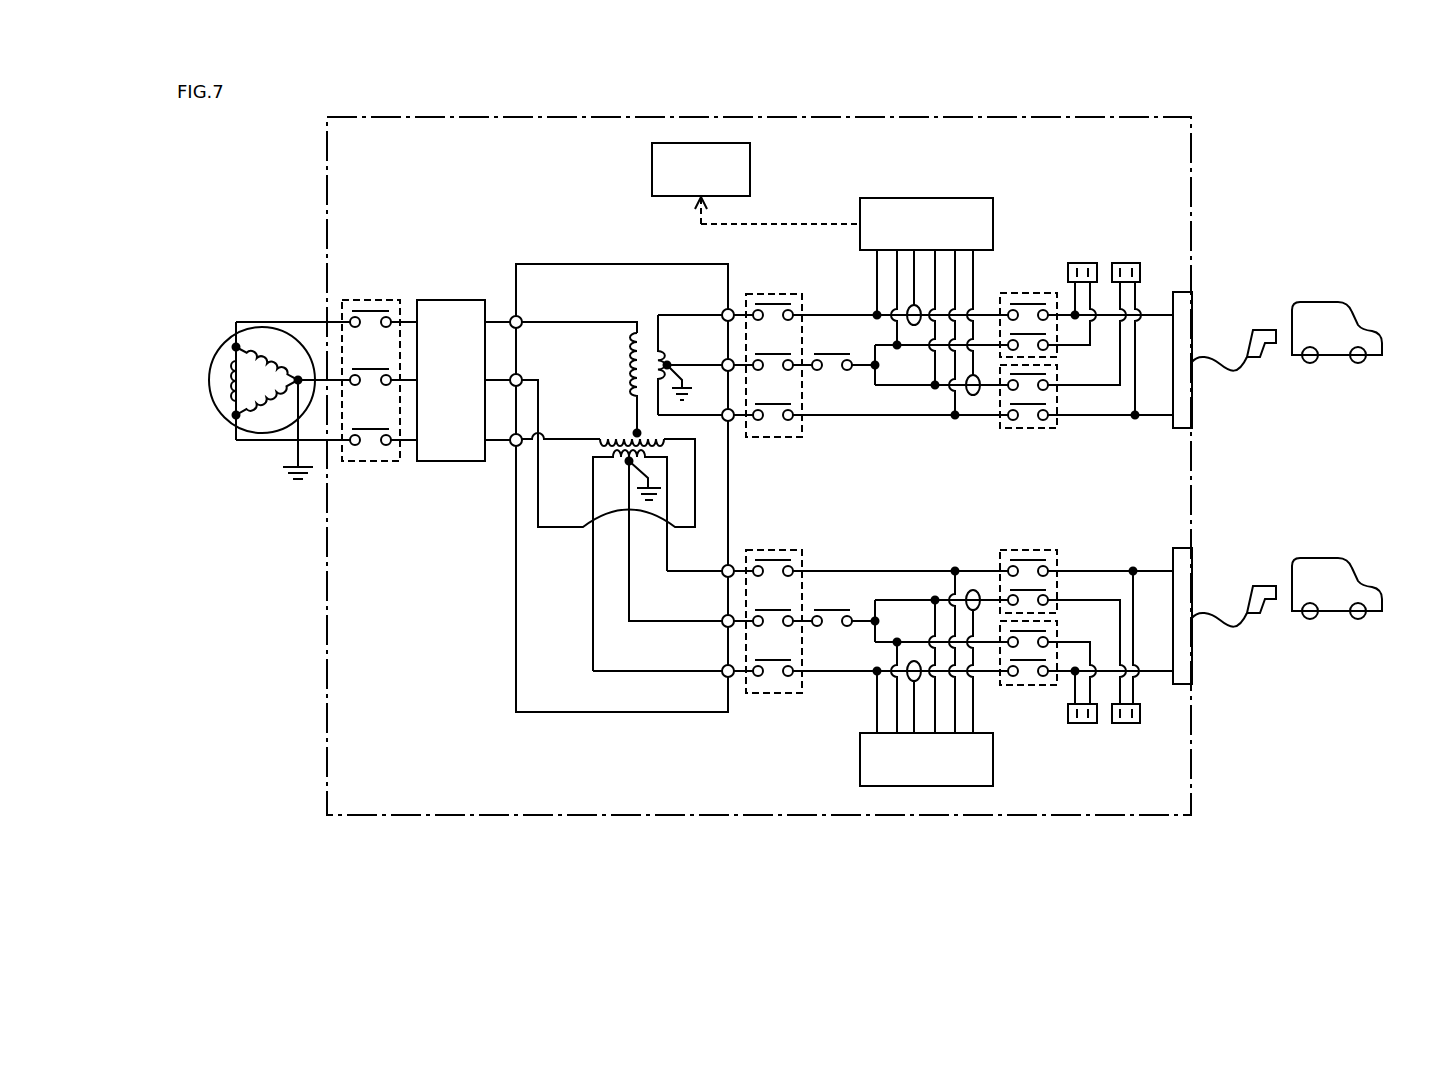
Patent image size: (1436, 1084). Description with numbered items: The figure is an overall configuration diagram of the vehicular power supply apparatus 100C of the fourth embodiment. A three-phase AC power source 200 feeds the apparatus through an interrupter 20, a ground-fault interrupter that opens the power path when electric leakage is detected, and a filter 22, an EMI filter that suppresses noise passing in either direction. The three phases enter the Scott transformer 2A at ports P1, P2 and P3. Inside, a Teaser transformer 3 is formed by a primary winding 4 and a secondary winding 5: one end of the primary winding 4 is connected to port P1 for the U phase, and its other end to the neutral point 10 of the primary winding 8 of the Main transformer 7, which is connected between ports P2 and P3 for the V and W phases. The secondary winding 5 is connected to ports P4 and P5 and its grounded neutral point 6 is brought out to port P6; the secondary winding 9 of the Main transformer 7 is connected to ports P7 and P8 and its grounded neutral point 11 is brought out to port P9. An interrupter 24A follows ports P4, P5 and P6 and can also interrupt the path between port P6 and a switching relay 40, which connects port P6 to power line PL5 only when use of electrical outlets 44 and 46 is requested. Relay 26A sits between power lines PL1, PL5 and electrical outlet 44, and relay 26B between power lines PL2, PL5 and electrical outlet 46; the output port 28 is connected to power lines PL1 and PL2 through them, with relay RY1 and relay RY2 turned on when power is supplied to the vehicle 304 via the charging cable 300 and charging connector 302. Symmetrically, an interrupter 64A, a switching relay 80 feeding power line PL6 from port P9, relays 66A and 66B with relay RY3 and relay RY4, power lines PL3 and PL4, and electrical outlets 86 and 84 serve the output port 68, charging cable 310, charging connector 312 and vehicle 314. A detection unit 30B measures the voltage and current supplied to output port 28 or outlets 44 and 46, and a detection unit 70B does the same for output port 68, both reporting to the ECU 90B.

The vehicular power supply apparatus 100C is at (1137, 116).
The three-phase AC power source 200 is at (217, 350).
The interrupter 20 is at (376, 299).
The filter 22 is at (450, 299).
The Scott transformer 2A is at (687, 263).
The Teaser transformer 3 is at (659, 353).
The primary winding 4 is at (629, 369).
The secondary winding 5 is at (665, 359).
The neutral point 6 is at (669, 363).
The Main transformer 7 is at (622, 525).
The primary winding 8 is at (600, 432).
The secondary winding 9 is at (626, 465).
The neutral point 10 is at (635, 430).
The neutral point 11 is at (628, 482).
The port P1 is at (522, 326).
The port P2 is at (522, 377).
The port P3 is at (513, 446).
The port P4 is at (725, 311).
The port P5 is at (730, 422).
The port P6 is at (725, 370).
The port P7 is at (725, 567).
The port P8 is at (725, 667).
The port P9 is at (725, 617).
The interrupter 24A is at (775, 294).
The interrupter 64A is at (775, 550).
The power line PL1 is at (834, 313).
The power line PL2 is at (834, 418).
The power line PL3 is at (834, 569).
The power line PL4 is at (834, 674).
The power line PL5 is at (859, 368).
The power line PL6 is at (859, 625).
The switching relay 40 is at (834, 353).
The switching relay 80 is at (834, 609).
The detection unit 30B is at (994, 217).
The detection unit 70B is at (994, 765).
The relay 26A is at (1019, 302).
The relay 26B is at (1055, 421).
The relay 66A is at (1019, 559).
The relay 66B is at (1018, 676).
The relay RY1 is at (1042, 267).
The relay RY2 is at (1050, 398).
The relay RY3 is at (1042, 525).
The relay RY4 is at (1029, 662).
The electrical outlet 44 is at (1084, 263).
The electrical outlet 46 is at (1127, 263).
The electrical outlet 84 is at (1083, 723).
The electrical outlet 86 is at (1126, 723).
The output port 28 is at (1179, 292).
The output port 68 is at (1179, 549).
The charging cable 300 is at (1211, 353).
The charging cable 310 is at (1211, 609).
The charging connector 302 is at (1267, 329).
The charging connector 312 is at (1267, 585).
The vehicle 304 is at (1325, 301).
The vehicle 314 is at (1325, 557).
The ECU 90B is at (664, 197).